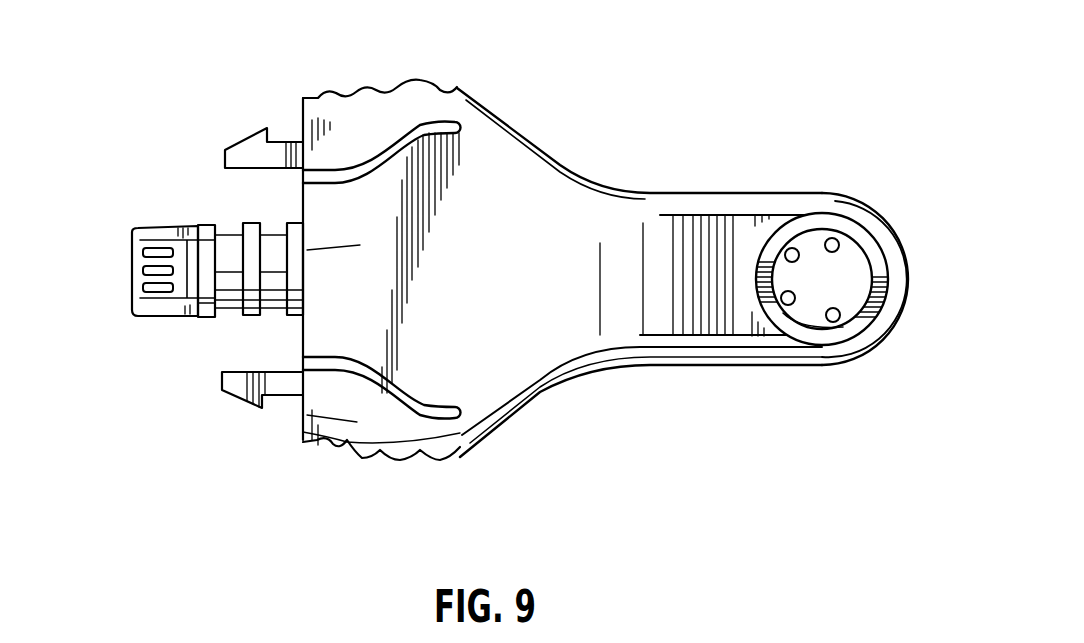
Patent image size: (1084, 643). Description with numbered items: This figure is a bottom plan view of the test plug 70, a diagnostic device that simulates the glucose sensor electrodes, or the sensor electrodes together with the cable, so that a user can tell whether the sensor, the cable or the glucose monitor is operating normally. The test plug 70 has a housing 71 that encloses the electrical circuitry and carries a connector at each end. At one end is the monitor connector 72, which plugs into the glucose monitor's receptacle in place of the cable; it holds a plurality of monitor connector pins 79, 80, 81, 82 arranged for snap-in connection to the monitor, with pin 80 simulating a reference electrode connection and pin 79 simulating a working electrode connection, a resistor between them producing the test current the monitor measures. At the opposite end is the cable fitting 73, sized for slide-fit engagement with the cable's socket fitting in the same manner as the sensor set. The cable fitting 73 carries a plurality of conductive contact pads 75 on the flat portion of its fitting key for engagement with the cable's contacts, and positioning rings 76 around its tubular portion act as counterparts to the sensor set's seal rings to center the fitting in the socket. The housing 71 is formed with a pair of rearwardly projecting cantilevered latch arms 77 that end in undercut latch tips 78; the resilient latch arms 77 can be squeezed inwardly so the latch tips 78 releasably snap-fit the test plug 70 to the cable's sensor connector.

The test plug 70 is at (630, 129).
The housing 71 is at (577, 380).
The monitor connector 72 is at (873, 248).
The cable fitting 73 is at (155, 233).
The conductive contact pads 75 is at (134, 288).
The positioning rings 76 is at (245, 222).
The latch arms 77 is at (383, 96).
The latch tips 78 is at (233, 387).
The monitor connector pin 79 is at (841, 323).
The monitor connector pin 80 is at (790, 306).
The monitor connector pin 81 is at (789, 247).
The monitor connector pin 82 is at (834, 238).